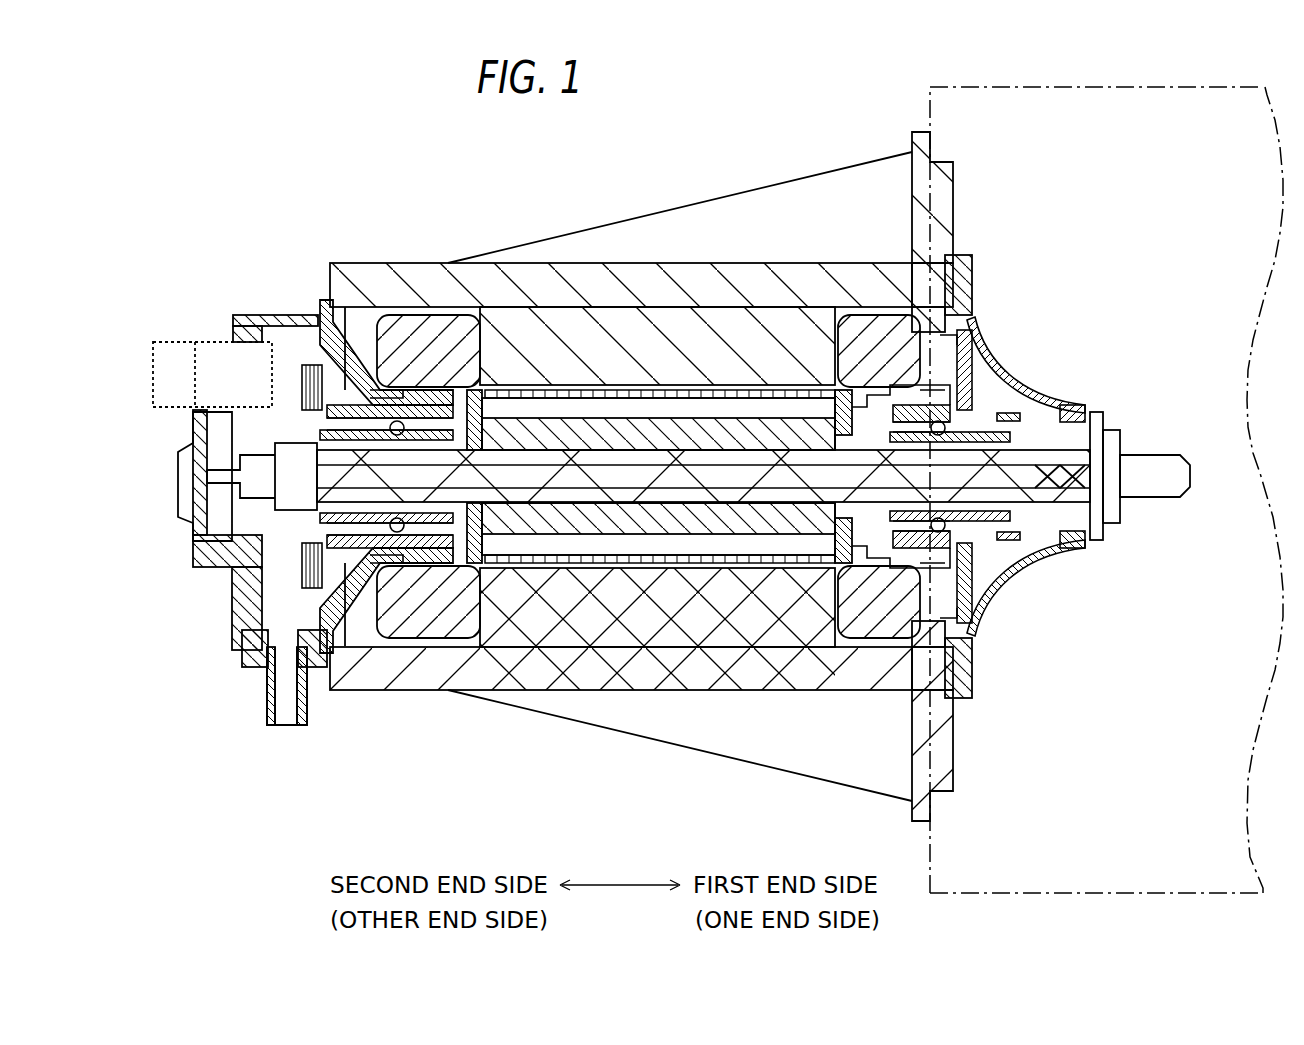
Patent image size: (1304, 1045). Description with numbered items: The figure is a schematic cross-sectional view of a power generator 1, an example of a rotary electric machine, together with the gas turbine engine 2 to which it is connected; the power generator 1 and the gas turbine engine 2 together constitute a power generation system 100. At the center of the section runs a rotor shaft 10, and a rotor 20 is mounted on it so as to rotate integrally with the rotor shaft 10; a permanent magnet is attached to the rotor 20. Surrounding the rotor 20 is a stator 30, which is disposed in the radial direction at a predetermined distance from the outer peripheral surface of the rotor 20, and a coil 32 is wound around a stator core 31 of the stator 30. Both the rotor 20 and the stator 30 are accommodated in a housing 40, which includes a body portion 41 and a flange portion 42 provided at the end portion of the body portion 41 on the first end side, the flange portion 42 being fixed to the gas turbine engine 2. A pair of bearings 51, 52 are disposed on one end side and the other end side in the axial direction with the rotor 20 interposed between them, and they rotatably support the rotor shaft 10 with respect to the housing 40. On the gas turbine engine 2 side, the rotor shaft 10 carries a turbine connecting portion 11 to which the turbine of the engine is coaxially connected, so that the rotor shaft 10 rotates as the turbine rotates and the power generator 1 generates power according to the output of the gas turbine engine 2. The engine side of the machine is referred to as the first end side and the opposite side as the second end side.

The power generation system 100 is at (228, 241).
The power generator 1 is at (335, 212).
The gas turbine engine 2 is at (1057, 88).
The rotor shaft 10 is at (672, 537).
The turbine connecting portion 11 is at (1130, 507).
The rotor 20 is at (540, 560).
The stator 30 is at (770, 648).
The stator core 31 is at (805, 625).
The coil 32 is at (858, 625).
The housing 40 is at (412, 262).
The body portion 41 is at (522, 273).
The flange portion 42 is at (920, 136).
The bearing 51 is at (965, 410).
The bearing 52 is at (302, 373).